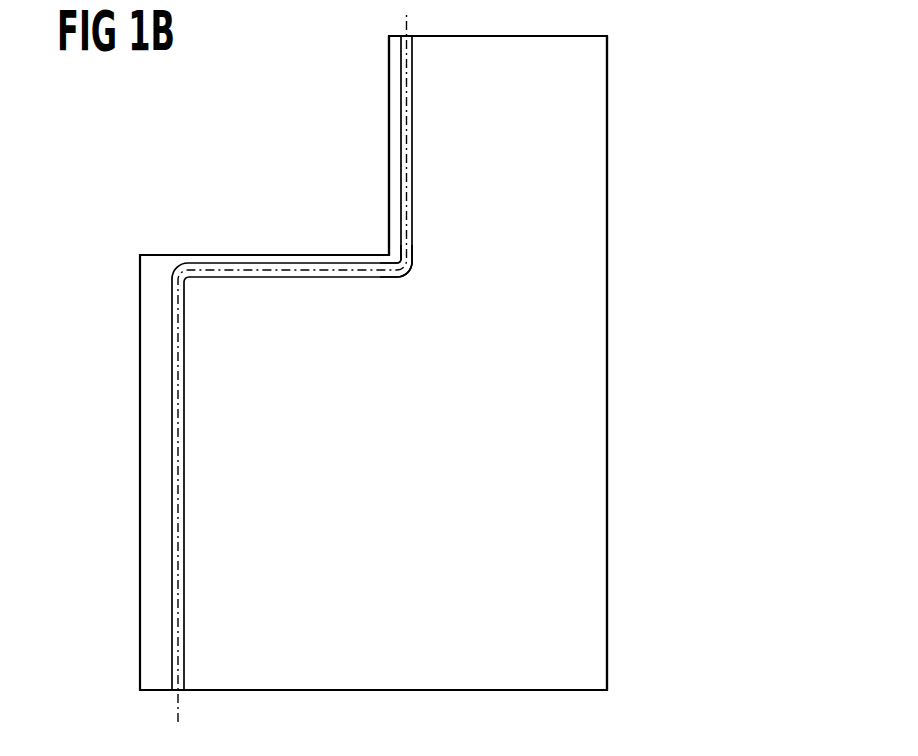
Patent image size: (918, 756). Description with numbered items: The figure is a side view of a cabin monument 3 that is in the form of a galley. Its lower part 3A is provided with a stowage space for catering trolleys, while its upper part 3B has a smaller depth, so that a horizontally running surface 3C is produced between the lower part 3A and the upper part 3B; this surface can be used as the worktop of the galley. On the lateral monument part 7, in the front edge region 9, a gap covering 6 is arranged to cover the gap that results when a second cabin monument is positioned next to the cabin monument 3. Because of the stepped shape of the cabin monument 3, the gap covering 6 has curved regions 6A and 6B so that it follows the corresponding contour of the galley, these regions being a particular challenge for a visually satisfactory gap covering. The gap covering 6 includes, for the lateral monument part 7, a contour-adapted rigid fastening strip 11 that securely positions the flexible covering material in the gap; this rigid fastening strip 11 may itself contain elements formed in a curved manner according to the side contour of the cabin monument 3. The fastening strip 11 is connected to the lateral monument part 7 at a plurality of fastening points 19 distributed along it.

The cabin monument 3 is at (108, 252).
The lower part 3A is at (595, 533).
The upper part 3B is at (595, 144).
The horizontally running surface 3C is at (236, 240).
The gap covering 6 is at (404, 135).
The curved region 6A is at (189, 279).
The curved region 6B is at (413, 279).
The lateral monument part 7 is at (405, 460).
The front edge region 9 is at (374, 112).
The rigid fastening strip 11 is at (176, 410).
The fastening points 19 is at (176, 298).